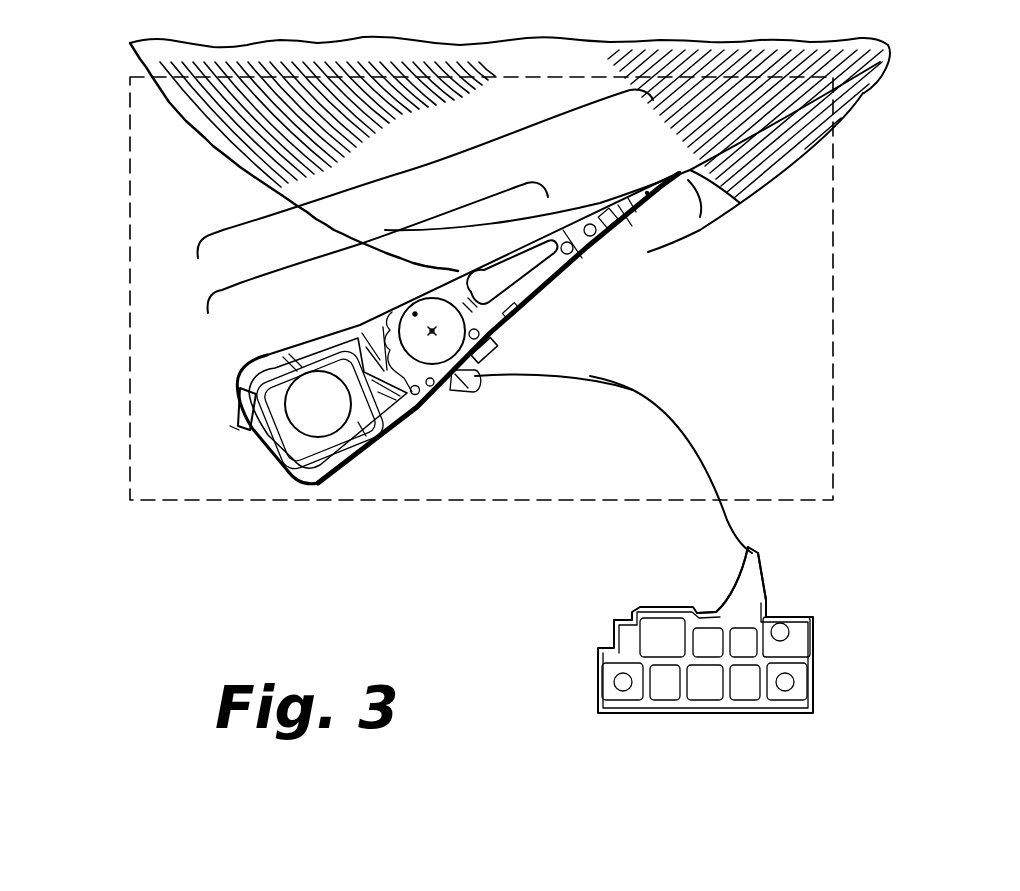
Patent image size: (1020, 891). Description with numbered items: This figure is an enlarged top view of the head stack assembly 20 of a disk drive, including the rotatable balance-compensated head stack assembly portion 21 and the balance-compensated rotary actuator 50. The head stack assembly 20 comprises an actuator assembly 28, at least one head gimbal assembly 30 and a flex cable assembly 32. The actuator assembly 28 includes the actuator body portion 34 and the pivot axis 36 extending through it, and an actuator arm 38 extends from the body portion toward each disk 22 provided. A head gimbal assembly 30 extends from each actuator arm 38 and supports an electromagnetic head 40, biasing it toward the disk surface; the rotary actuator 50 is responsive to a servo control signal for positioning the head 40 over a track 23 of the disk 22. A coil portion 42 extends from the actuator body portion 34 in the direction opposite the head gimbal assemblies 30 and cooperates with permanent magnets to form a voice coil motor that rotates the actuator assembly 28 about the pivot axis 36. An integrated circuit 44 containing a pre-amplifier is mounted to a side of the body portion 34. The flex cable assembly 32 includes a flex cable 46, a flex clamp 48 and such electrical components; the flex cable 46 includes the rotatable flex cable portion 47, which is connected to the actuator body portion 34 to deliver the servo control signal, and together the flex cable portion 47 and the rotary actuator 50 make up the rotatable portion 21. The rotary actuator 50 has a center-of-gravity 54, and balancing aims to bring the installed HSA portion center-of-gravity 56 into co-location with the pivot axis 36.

The head stack assembly 20 is at (104, 282).
The rotatable balance-compensated head stack assembly portion 21 is at (833, 392).
The disk 22 is at (864, 92).
The track 23 is at (740, 203).
The actuator assembly 28 is at (395, 232).
The head gimbal assembly 30 is at (596, 276).
The flex cable assembly 32 is at (680, 453).
The actuator body portion 34 is at (410, 292).
The pivot axis 36 is at (431, 329).
The actuator arm 38 is at (526, 250).
The head 40 is at (680, 173).
The coil portion 42 is at (270, 352).
The integrated circuit 44 is at (498, 352).
The flex cable 46 is at (737, 520).
The rotatable flex cable portion 47 is at (633, 390).
The flex clamp 48 is at (600, 682).
The balance-compensated rotary actuator 50 is at (455, 155).
The BC rotary actuator center-of-gravity 54 is at (410, 308).
The test installed HSA portion center-of-gravity 56 is at (431, 337).